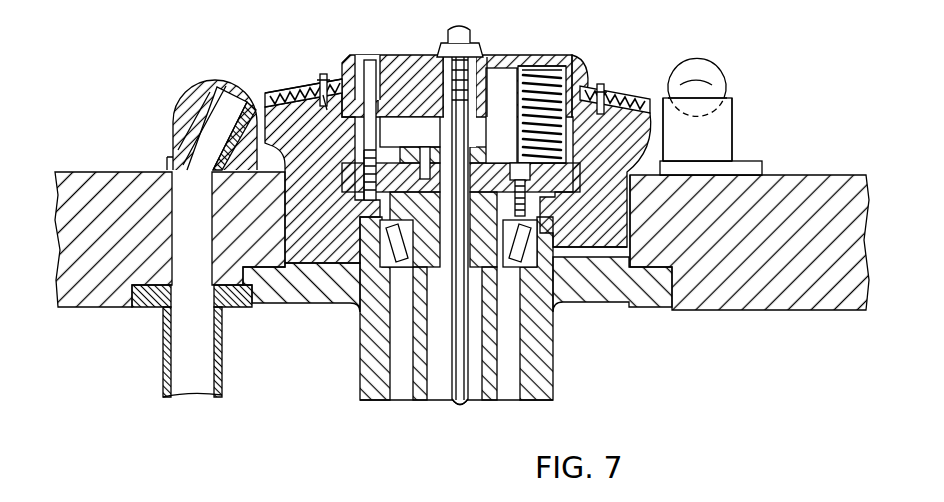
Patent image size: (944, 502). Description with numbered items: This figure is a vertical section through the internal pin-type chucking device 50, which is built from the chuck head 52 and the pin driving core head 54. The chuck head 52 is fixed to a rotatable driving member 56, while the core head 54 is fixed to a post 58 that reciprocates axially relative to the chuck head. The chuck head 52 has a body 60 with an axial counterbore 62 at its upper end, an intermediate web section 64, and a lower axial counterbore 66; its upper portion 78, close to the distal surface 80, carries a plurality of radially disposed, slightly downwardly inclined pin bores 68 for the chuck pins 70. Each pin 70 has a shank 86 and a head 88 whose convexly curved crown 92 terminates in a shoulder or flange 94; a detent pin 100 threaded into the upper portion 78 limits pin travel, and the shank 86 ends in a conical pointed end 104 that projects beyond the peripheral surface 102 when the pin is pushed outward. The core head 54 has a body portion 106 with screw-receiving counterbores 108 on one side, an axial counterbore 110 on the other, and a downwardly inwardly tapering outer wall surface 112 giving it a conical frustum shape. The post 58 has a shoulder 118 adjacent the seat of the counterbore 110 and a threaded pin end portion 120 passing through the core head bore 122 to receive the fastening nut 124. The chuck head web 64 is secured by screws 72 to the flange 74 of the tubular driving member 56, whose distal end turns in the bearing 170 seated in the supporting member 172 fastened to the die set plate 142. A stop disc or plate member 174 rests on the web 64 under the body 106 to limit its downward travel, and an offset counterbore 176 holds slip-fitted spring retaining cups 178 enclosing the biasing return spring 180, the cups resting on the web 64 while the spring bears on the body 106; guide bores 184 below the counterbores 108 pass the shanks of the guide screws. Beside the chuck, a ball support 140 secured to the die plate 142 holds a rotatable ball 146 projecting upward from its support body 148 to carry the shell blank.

The internal pin-type chucking device 50 is at (661, 70).
The chuck head 52 is at (657, 95).
The pin driving core head 54 is at (547, 51).
The driving member 56 is at (418, 388).
The post 58 is at (452, 392).
The body 60 is at (640, 176).
The axial counterbore 62 is at (580, 148).
The web section 64 is at (472, 182).
The axial counterbore 66 is at (556, 217).
The pin bores 68 is at (292, 90).
The chuck pins 70 is at (269, 86).
The screws 72 is at (528, 186).
The flange 74 is at (388, 206).
The upper portion 78 is at (272, 135).
The distal surface 80 is at (300, 86).
The shank 86 is at (266, 92).
The head 88 is at (322, 110).
The convexly curved crown 92 is at (600, 60).
The shoulder or flange 94 is at (312, 80).
The detent pin 100 is at (323, 86).
The peripheral edge or surface 102 is at (662, 137).
The conical pointed end 104 is at (652, 110).
The body portion 106 is at (396, 62).
The screw-receiving counterbores 108 is at (367, 60).
The axial counterbore 110 is at (437, 121).
The tapering peripheral outer wall surface 112 is at (341, 55).
The shoulder 118 is at (468, 92).
The threaded pin end portion 120 is at (450, 84).
The core head bore 122 is at (442, 52).
The fastening nut 124 is at (472, 38).
The ball supports 140 is at (747, 121).
The die set plate 142 is at (90, 190).
The balls 146 is at (710, 86).
The support bodies 148 is at (724, 156).
The bearing 170 is at (532, 256).
The supporting member 172 is at (340, 285).
The stop disc or plate member 174 is at (507, 160).
The offset counterbore 176 is at (518, 76).
The spring retaining cups 178 is at (518, 106).
The biasing return spring 180 is at (560, 74).
The guide bores 184 is at (365, 122).